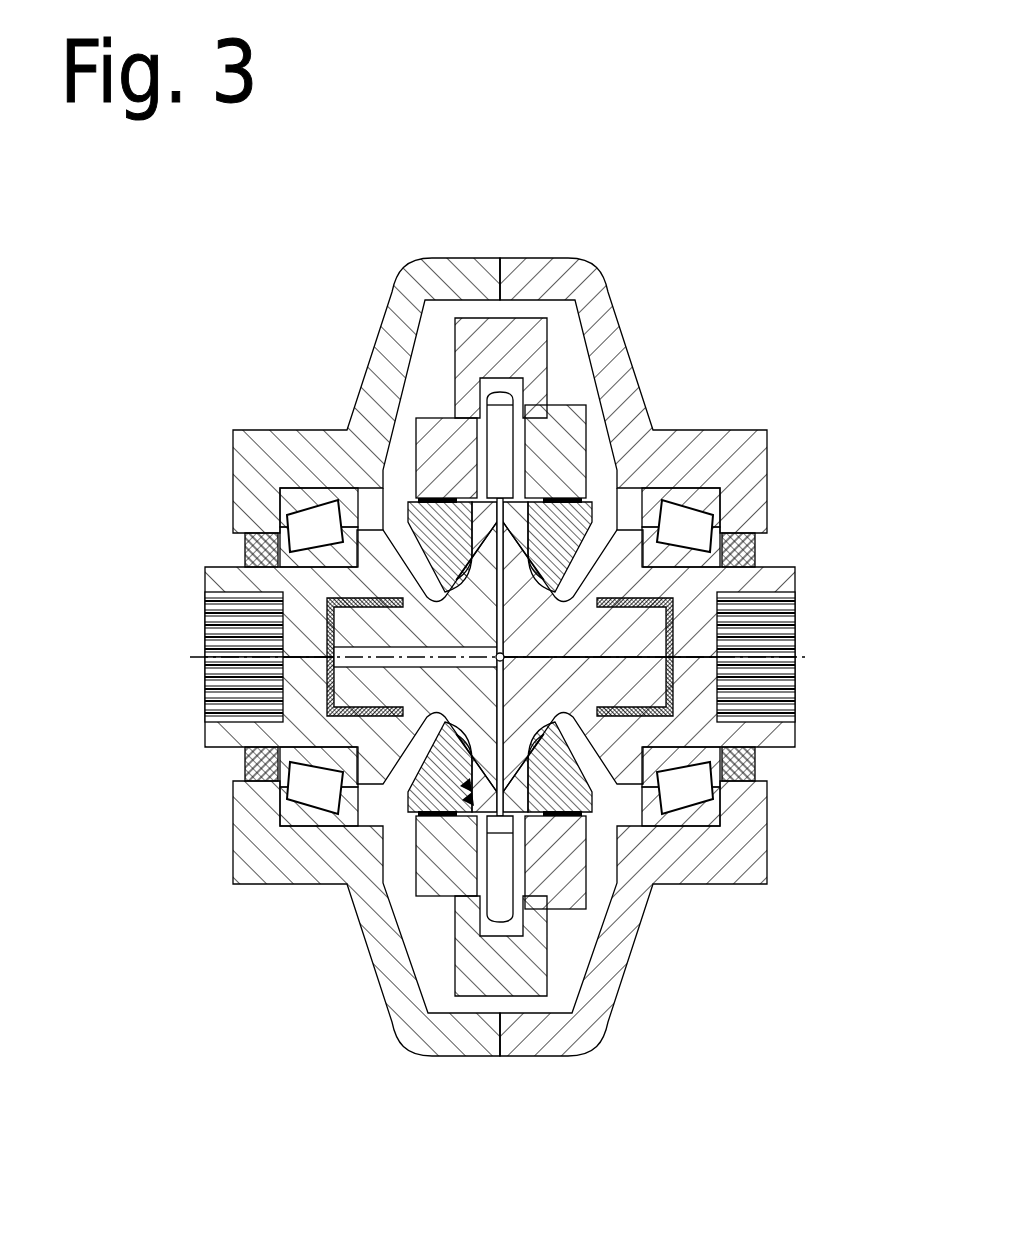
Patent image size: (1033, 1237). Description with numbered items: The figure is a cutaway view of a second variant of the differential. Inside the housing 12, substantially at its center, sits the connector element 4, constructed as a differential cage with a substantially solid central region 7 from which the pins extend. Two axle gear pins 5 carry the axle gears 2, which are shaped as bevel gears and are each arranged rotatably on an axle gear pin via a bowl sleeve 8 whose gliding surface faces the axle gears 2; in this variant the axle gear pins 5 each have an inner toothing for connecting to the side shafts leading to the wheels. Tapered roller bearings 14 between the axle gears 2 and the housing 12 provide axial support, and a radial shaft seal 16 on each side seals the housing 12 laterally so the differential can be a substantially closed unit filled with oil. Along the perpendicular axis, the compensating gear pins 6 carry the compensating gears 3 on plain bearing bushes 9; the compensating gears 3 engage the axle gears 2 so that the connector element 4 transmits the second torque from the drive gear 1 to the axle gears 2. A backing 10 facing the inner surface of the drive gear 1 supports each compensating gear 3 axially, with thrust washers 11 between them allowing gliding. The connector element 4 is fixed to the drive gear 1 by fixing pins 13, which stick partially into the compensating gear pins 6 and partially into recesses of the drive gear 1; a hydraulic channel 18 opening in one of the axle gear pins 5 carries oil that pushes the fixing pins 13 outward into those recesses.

The drive gear 1 is at (490, 347).
The axle gears 2 is at (692, 593).
The compensating gears 3 is at (428, 530).
The connector element 4 is at (658, 432).
The axle gear pins 5 is at (553, 590).
The compensating gear pins 6 is at (475, 818).
The central region 7 is at (473, 617).
The bowl sleeve 8 is at (313, 618).
The plain bearing bushes 9 is at (472, 798).
The backing 10 is at (555, 447).
The thrust washers 11 is at (470, 784).
The housing 12 is at (390, 963).
The fixing pins 13 is at (498, 418).
The tapered roller bearings 14 is at (313, 773).
The radial shaft seal 16 is at (265, 542).
The hydraulic channel 18 is at (498, 488).